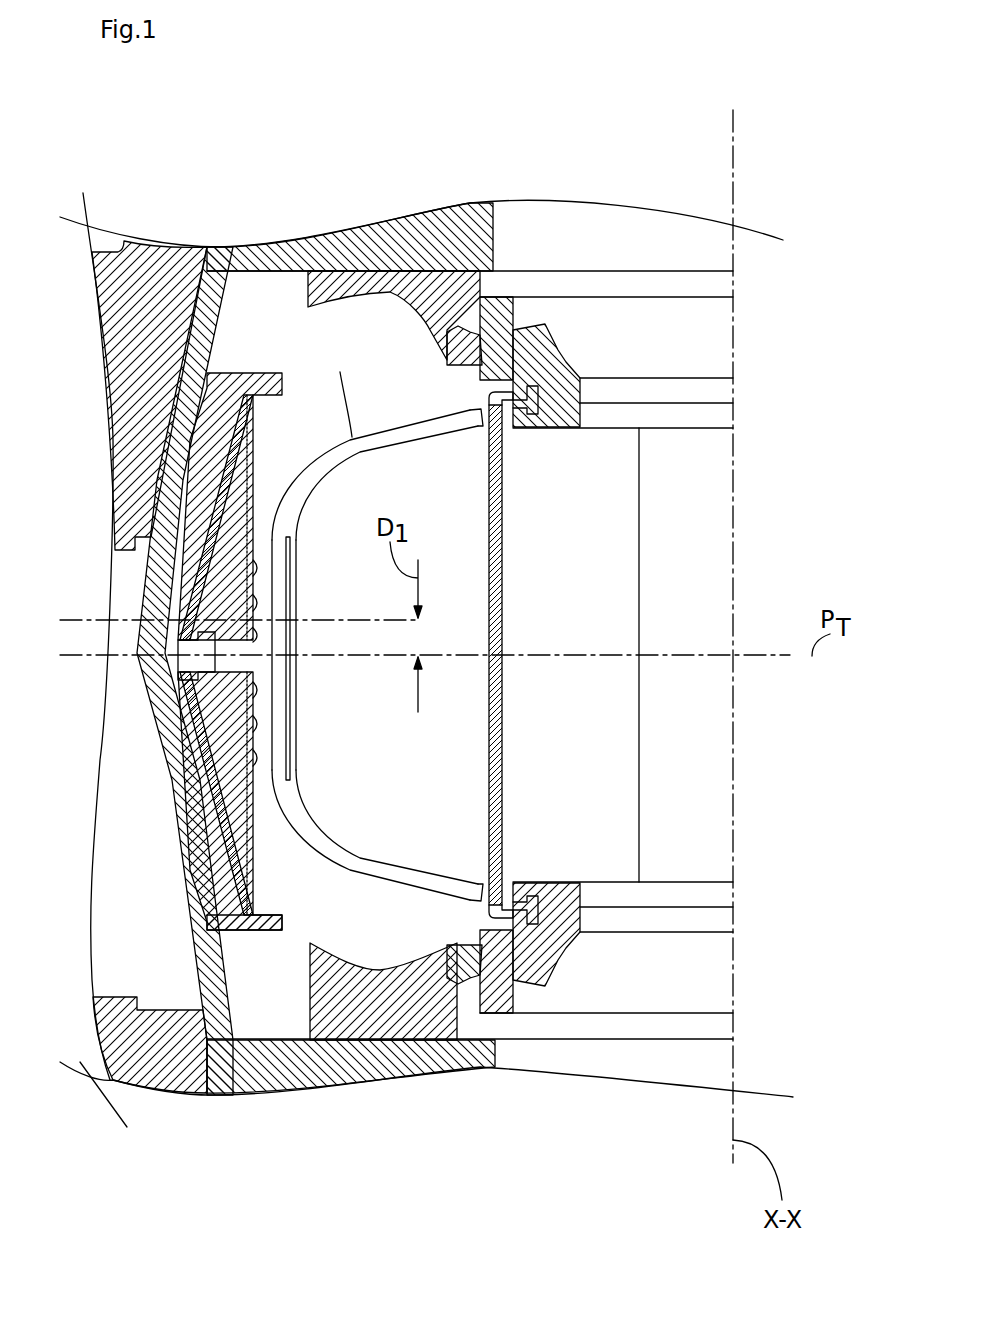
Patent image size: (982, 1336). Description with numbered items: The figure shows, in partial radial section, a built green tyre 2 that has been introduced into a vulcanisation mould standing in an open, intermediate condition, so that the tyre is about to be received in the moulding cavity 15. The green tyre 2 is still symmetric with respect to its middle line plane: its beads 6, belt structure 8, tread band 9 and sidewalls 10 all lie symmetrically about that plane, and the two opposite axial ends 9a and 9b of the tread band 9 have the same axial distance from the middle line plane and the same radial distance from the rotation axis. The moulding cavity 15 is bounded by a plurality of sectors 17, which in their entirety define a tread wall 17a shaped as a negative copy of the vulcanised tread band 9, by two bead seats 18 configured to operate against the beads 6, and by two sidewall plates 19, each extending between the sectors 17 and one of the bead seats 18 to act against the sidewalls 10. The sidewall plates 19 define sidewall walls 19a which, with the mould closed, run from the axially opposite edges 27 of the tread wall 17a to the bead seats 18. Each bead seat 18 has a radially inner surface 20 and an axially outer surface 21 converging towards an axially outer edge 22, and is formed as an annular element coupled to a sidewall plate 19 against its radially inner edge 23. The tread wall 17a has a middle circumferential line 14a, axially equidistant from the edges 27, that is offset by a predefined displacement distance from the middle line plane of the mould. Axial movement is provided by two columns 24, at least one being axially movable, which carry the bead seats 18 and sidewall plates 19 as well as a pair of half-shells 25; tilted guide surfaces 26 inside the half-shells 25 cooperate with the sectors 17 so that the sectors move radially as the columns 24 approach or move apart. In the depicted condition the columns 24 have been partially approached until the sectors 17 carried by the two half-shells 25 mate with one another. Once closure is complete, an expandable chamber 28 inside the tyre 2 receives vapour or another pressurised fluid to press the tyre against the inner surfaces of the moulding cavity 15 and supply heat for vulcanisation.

The built green tyre 2 is at (352, 437).
The beads 6 is at (468, 420).
The belt structure 8 is at (290, 722).
The tread band 9 is at (255, 762).
The axial end of the tread band 9a is at (277, 817).
The axial end of the tread band 9b is at (283, 503).
The sidewalls 10 is at (345, 440).
The middle circumferential line 14a is at (210, 650).
The moulding cavity 15 is at (373, 383).
The sectors 17 is at (200, 605).
The tread wall 17a is at (265, 585).
The bead seats 18 is at (490, 392).
The sidewall plates 19 is at (445, 295).
The sidewall walls 19a is at (392, 290).
The radially inner surface 20 is at (462, 910).
The axially outer surface 21 is at (450, 1045).
The axially outer edge 22 is at (502, 330).
The radially inner edge 23 is at (447, 345).
The columns 24 is at (630, 233).
The half-shells 25 is at (245, 252).
The tilted guide surfaces 26 is at (203, 260).
The axially opposite edges 27 is at (282, 262).
The expandable chamber 28 is at (502, 545).